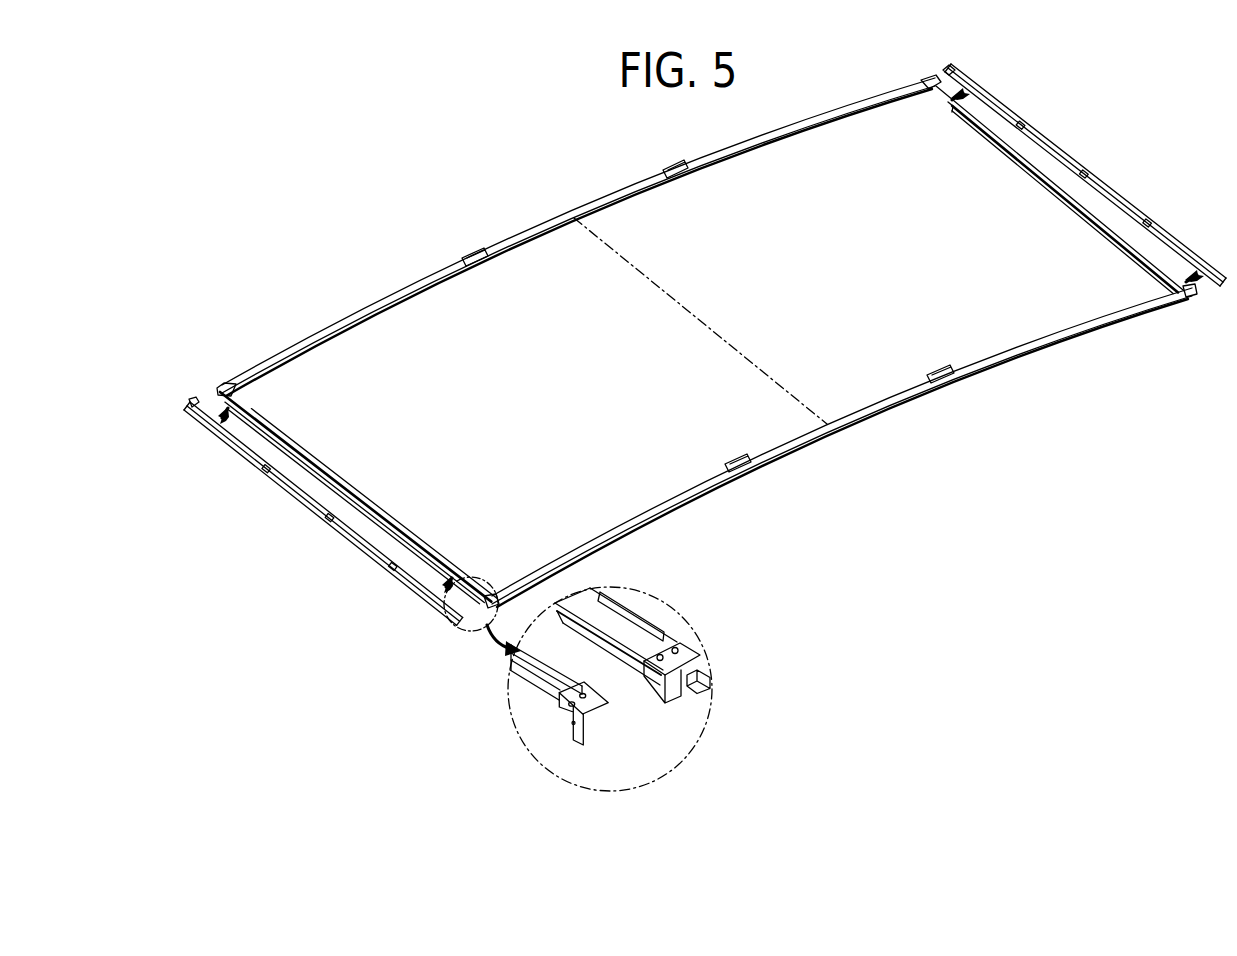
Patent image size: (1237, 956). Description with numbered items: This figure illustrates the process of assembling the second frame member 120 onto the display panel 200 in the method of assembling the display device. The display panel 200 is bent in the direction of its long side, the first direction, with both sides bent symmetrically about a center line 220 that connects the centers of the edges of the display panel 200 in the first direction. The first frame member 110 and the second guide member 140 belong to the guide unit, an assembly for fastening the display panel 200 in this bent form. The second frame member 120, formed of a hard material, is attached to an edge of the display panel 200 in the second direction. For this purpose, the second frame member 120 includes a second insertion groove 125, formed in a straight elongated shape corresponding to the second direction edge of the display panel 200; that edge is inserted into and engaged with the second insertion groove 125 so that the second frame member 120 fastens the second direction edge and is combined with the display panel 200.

The first frame member 110 is at (548, 225).
The second frame member 120 is at (292, 487).
The second insertion groove 125 is at (594, 716).
The second guide member 140 is at (351, 503).
The display panel 200 is at (1026, 192).
The center line 220 is at (618, 255).